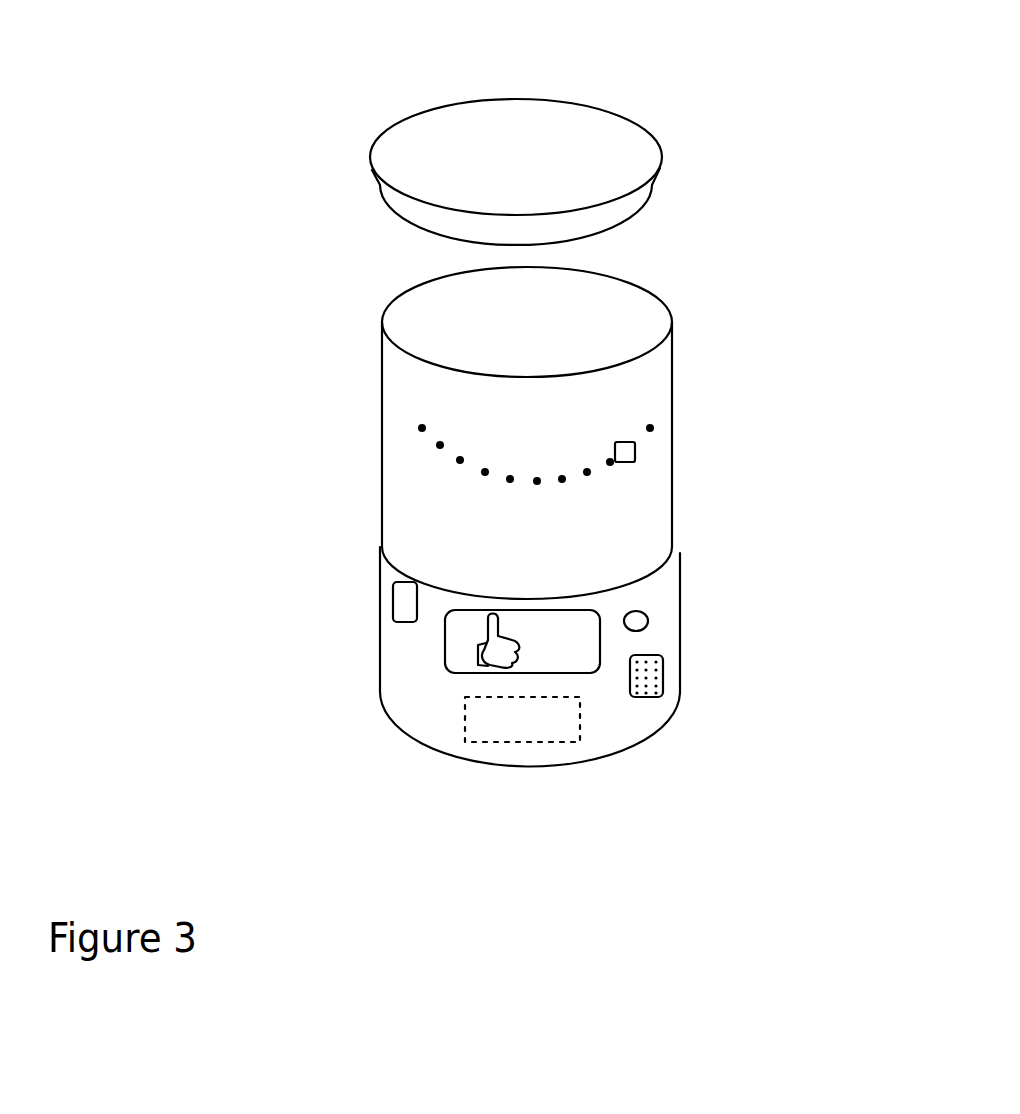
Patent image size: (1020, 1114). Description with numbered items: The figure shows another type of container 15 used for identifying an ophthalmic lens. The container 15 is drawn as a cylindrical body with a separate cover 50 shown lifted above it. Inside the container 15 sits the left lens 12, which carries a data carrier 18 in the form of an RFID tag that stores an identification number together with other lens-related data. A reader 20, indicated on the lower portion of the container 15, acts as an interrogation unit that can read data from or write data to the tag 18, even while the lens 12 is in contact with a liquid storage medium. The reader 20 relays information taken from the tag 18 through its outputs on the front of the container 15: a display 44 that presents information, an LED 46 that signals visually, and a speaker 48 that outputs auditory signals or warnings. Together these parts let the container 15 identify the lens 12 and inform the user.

The lid 50 is at (660, 146).
The container 15 is at (640, 283).
The left lens 12 is at (447, 457).
The data carrier 18 is at (640, 451).
The display 44 is at (453, 647).
The LED 46 is at (648, 622).
The speaker 48 is at (663, 676).
The reader 20 is at (497, 743).